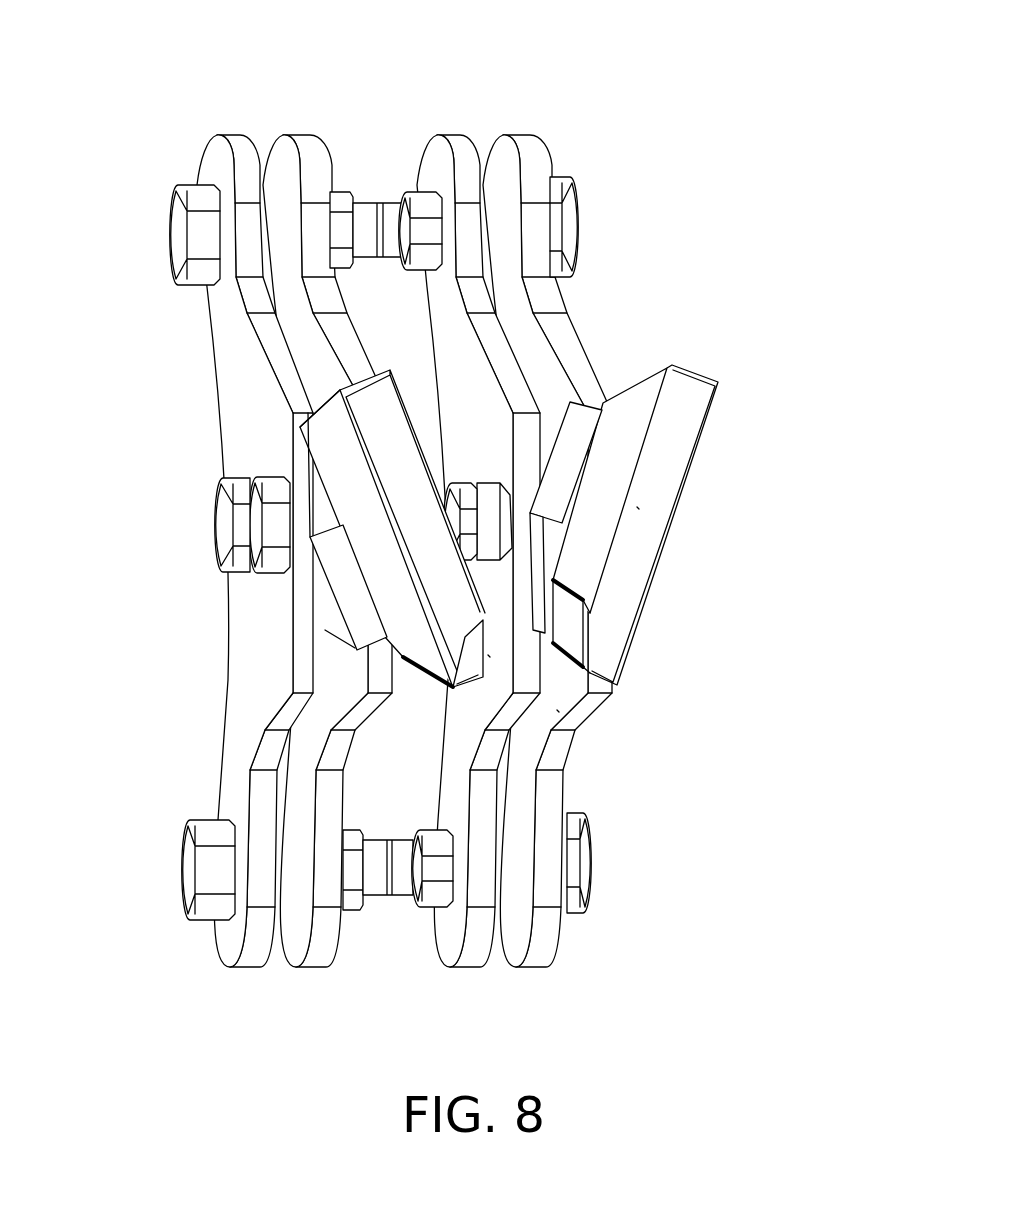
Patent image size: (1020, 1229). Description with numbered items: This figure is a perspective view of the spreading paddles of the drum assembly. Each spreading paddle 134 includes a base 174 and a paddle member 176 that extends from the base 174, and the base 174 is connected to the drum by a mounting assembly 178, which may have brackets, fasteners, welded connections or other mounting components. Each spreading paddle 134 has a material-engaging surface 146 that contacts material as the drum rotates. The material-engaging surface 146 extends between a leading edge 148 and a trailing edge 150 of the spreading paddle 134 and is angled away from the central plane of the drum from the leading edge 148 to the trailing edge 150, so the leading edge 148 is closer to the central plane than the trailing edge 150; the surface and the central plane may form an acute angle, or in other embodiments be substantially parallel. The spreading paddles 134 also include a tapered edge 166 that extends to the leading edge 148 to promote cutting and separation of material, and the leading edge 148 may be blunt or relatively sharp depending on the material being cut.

The mounting assembly 178 is at (530, 88).
The trailing edge 150 is at (322, 408).
The spreading paddle material-engaging surface 146 is at (342, 453).
The base 174 is at (326, 577).
The spreading paddle 134 is at (408, 585).
The paddle member 176 is at (637, 507).
The leading edge 148 is at (572, 640).
The tapered edge 166 is at (557, 710).